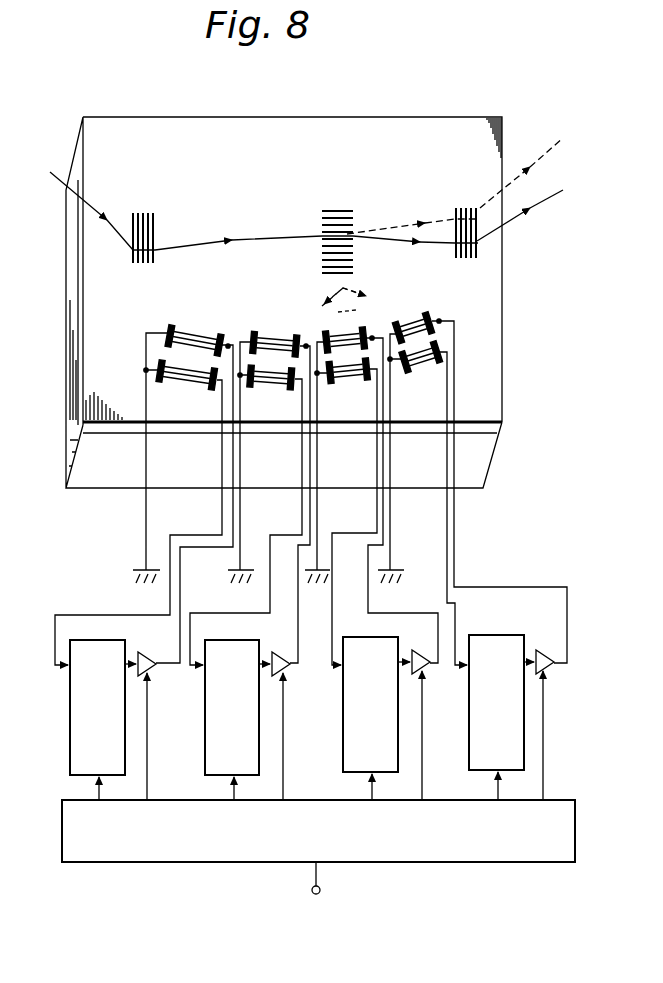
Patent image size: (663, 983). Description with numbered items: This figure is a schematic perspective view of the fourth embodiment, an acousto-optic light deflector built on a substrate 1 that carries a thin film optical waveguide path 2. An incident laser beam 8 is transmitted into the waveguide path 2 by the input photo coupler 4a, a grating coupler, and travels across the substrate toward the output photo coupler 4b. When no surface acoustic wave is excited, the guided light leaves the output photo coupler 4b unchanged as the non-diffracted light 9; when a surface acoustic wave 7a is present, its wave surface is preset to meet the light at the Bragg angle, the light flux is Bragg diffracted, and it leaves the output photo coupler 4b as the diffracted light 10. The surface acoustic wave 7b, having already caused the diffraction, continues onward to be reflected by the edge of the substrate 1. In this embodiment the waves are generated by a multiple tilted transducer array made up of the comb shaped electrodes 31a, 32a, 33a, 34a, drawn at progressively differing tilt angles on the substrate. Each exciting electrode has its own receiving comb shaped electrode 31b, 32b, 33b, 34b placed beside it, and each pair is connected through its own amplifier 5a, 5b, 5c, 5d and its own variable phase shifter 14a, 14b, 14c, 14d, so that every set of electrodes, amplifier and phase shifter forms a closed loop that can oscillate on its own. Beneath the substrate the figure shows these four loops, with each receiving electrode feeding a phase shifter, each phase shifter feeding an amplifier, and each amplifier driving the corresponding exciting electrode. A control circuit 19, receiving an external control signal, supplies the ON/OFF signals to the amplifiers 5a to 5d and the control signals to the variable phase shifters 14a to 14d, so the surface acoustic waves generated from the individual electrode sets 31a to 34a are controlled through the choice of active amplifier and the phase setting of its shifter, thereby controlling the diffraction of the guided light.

The substrate 1 is at (483, 466).
The thin film optical waveguide path 2 is at (497, 428).
The input photo coupler 4a is at (144, 212).
The output photo coupler 4b is at (463, 208).
The amplifier 5a is at (147, 655).
The amplifier 5b is at (281, 655).
The amplifier 5c is at (419, 651).
The amplifier 5d is at (544, 649).
The surface acoustic wave 7a is at (323, 262).
The surface acoustic wave 7b is at (333, 210).
The incident laser beam 8 is at (50, 171).
The non-diffracted light 9 is at (546, 152).
The diffracted light 10 is at (547, 195).
The variable phase shifter 14a is at (80, 776).
The variable phase shifter 14b is at (215, 776).
The variable phase shifter 14c is at (351, 773).
The variable phase shifter 14d is at (477, 771).
The control circuit 19 is at (138, 864).
The comb shaped electrode 31a is at (177, 326).
The receiving comb shaped electrode 31b is at (177, 382).
The comb shaped electrode 32a is at (256, 330).
The receiving comb shaped electrode 32b is at (268, 386).
The comb shaped electrode 33a is at (327, 332).
The receiving comb shaped electrode 33b is at (353, 384).
The comb shaped electrode 34a is at (407, 322).
The receiving comb shaped electrode 34b is at (422, 376).